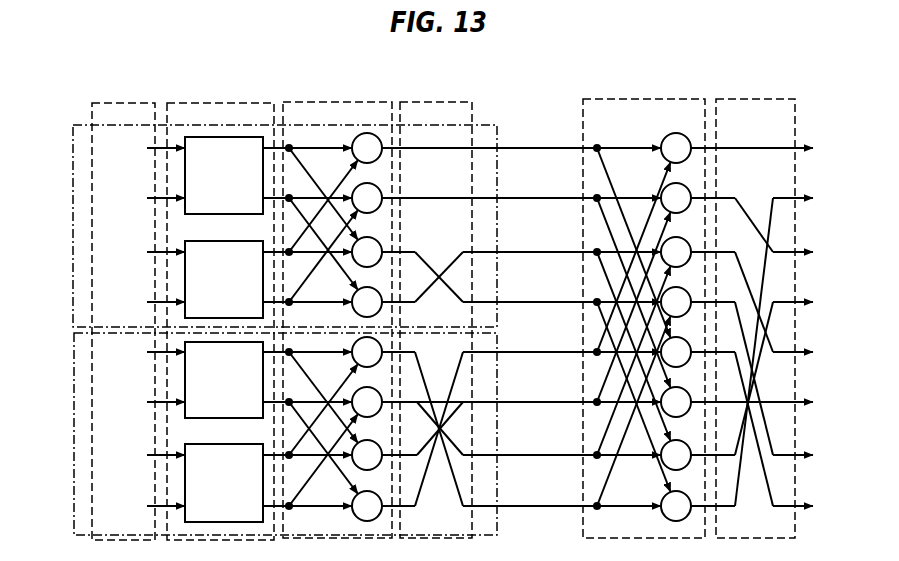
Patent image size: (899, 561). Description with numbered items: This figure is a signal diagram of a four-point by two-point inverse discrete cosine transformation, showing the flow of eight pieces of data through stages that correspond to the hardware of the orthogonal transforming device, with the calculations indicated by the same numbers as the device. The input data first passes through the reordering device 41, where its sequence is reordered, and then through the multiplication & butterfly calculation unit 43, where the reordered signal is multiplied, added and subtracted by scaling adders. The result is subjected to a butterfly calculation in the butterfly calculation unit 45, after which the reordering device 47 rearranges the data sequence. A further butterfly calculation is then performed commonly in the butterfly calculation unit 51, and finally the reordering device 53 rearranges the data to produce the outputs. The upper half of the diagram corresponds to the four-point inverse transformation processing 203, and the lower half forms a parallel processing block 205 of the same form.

The reordering device 41 is at (112, 103).
The multiplication & butterfly calculation unit 43 is at (220, 103).
The butterfly calculation unit 45 is at (335, 102).
The reordering device 47 is at (443, 102).
The butterfly calculation unit 51 is at (648, 99).
The reordering device 53 is at (742, 99).
The processing 203 is at (73, 131).
The lower processing block 205 is at (74, 341).